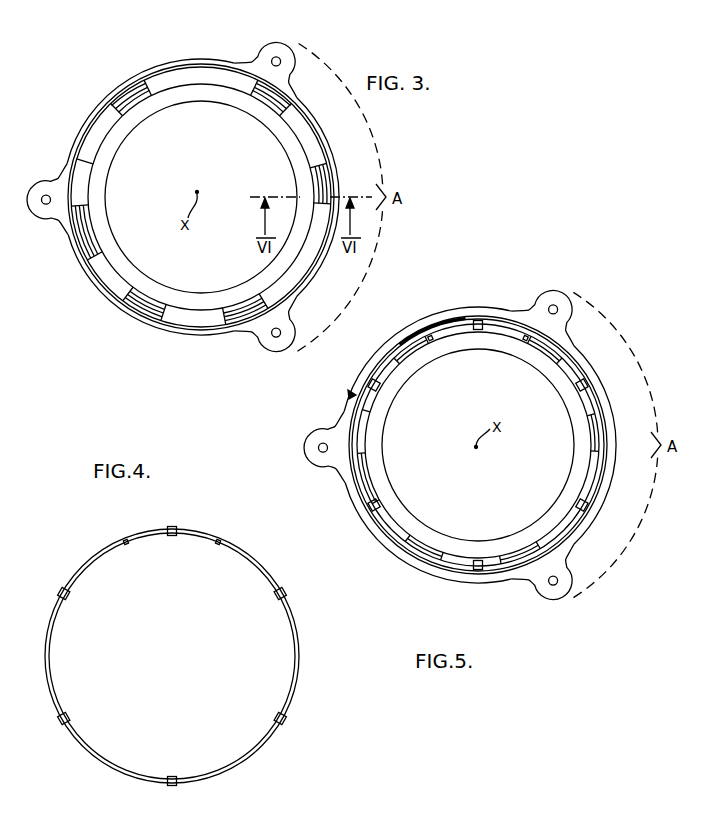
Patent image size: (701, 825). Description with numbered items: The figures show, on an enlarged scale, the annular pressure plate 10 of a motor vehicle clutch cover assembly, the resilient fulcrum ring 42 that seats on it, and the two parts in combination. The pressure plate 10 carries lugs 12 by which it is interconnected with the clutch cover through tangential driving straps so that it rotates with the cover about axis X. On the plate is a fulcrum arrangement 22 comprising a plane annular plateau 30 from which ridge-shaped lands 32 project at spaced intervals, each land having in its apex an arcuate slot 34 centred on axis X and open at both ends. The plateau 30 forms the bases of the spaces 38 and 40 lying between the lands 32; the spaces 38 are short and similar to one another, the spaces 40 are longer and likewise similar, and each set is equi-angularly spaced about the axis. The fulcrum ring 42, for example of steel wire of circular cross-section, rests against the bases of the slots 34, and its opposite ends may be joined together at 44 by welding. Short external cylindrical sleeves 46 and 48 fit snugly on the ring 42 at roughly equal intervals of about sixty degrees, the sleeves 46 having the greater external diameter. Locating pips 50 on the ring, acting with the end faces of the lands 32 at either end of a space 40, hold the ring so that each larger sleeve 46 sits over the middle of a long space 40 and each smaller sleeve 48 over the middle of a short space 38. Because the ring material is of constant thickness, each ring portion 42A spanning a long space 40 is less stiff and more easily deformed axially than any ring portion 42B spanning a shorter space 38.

In FIG. 3, the pressure plate 10 is at (194, 58).
In FIG. 5, the pressure plate 10 is at (522, 306).
In FIG. 3, the lugs 12 is at (46, 215).
In FIG. 5, the lugs 12 is at (542, 590).
In FIG. 5, the fulcrum arrangement 22 is at (406, 519).
In FIG. 3, the annular plateau 30 is at (213, 70).
In FIG. 3, the lands 32 is at (130, 100).
In FIG. 5, the lands 32 is at (404, 332).
In FIG. 3, the arcuate slot 34 is at (128, 90).
In FIG. 5, the arcuate slot 34 is at (388, 343).
In FIG. 3, the spaces 38 is at (100, 115).
In FIG. 5, the spaces 38 is at (368, 403).
In FIG. 3, the spaces 40 is at (168, 70).
In FIG. 5, the spaces 40 is at (513, 312).
In FIG. 5, the fulcrum ring 42 is at (460, 323).
In FIG. 4, the fulcrum ring 42 is at (100, 546).
In FIG. 5, the ring portion 42A is at (468, 305).
In FIG. 5, the ring portion 42B is at (349, 396).
In FIG. 4, the attachment of ring ends 44 is at (212, 779).
In FIG. 5, the sleeves 46 is at (484, 318).
In FIG. 4, the sleeves 46 is at (173, 527).
In FIG. 5, the sleeves 48 is at (372, 384).
In FIG. 4, the sleeves 48 is at (66, 598).
In FIG. 5, the locating pips 50 is at (428, 343).
In FIG. 4, the locating pips 50 is at (126, 546).